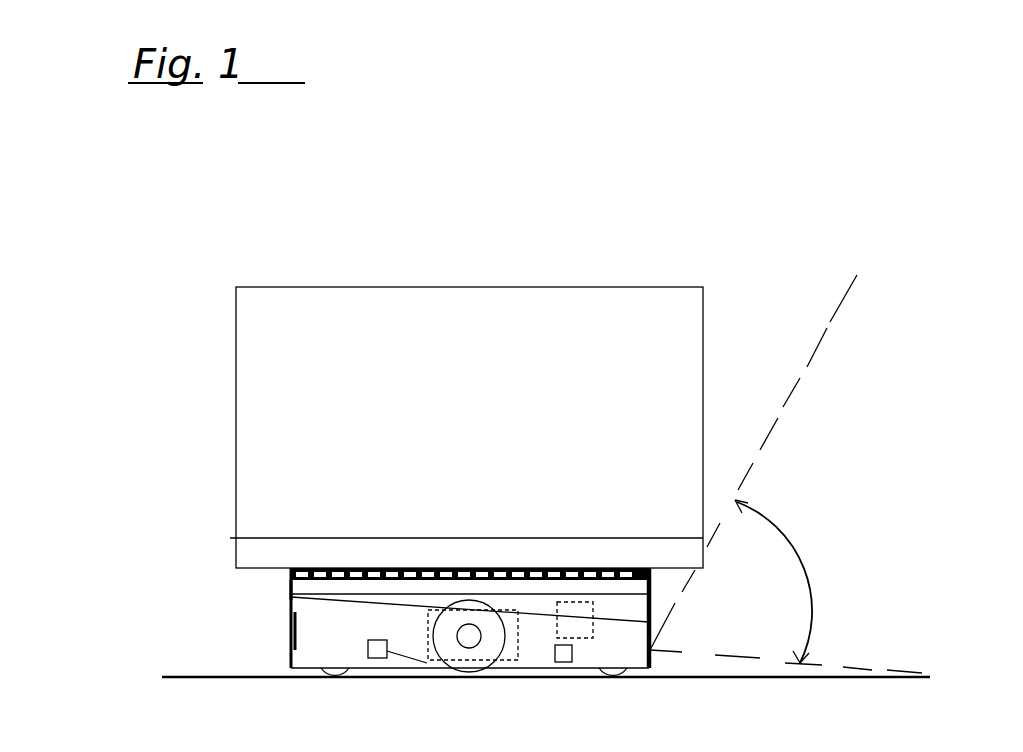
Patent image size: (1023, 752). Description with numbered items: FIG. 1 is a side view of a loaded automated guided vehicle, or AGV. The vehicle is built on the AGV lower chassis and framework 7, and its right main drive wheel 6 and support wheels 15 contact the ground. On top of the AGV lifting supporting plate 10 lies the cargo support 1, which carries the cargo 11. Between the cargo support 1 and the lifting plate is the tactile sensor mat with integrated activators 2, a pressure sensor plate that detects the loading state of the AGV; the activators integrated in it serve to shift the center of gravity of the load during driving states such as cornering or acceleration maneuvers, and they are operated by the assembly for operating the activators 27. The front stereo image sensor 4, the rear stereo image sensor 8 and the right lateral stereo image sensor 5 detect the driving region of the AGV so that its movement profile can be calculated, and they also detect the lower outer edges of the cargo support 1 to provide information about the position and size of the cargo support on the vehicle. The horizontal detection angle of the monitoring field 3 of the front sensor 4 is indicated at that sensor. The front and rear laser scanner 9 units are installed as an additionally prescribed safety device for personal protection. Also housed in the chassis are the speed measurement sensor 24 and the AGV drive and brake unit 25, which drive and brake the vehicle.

The cargo support 1 is at (447, 555).
The tactile sensor mat with integrated activators 2 is at (495, 568).
The horizontal detection angle of the monitoring field of sensor 4 3 is at (800, 557).
The front stereo image sensor 4 is at (650, 652).
The right lateral stereo image sensor 5 is at (563, 655).
The right main drive wheel 6 is at (427, 663).
The AGV lower chassis and framework 7 is at (338, 638).
The rear stereo image sensor 8 is at (290, 655).
The laser scanner 9 is at (293, 628).
The AGV lifting supporting plate 10 is at (363, 590).
The cargo, cargo load 11 is at (342, 450).
The support wheels 15 is at (651, 666).
The speed measurement sensor 24 is at (452, 650).
The AGV drive and brake unit 25 is at (512, 627).
The assembly for operating the activators 27 is at (567, 625).